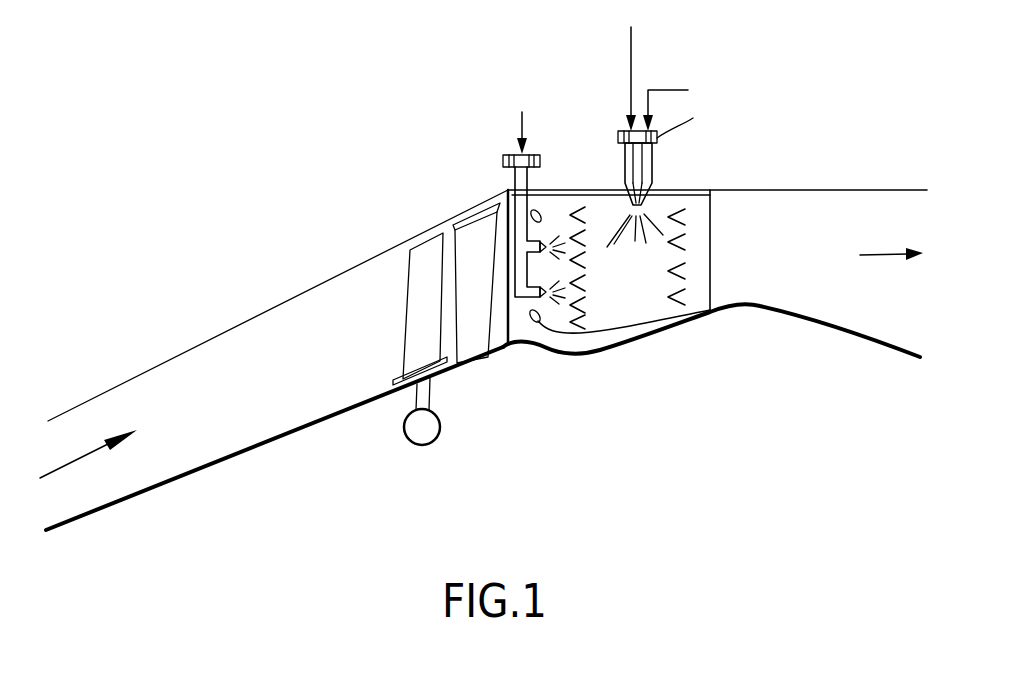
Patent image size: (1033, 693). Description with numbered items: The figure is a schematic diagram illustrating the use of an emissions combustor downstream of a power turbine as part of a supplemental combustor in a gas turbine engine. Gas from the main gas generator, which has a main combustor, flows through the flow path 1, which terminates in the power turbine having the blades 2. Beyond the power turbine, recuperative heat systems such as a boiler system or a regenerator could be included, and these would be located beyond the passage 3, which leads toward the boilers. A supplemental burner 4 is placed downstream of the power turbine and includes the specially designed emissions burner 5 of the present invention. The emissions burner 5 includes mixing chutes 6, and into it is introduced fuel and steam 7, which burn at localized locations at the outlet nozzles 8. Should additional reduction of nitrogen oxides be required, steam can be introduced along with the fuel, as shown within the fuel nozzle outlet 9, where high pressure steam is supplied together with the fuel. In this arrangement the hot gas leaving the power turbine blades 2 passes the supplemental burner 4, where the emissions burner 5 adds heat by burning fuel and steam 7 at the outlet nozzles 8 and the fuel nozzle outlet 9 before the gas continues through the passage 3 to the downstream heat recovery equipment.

The flow path 1 is at (232, 347).
The blades 2 is at (413, 258).
The passage 3 is at (847, 205).
The supplemental burner 4 is at (694, 212).
The emissions burner 5 is at (572, 350).
The mixing chutes 6 is at (676, 306).
The fuel and steam 7 is at (515, 170).
The outlet nozzles 8 is at (539, 211).
The fuel nozzle outlet 9 is at (654, 170).